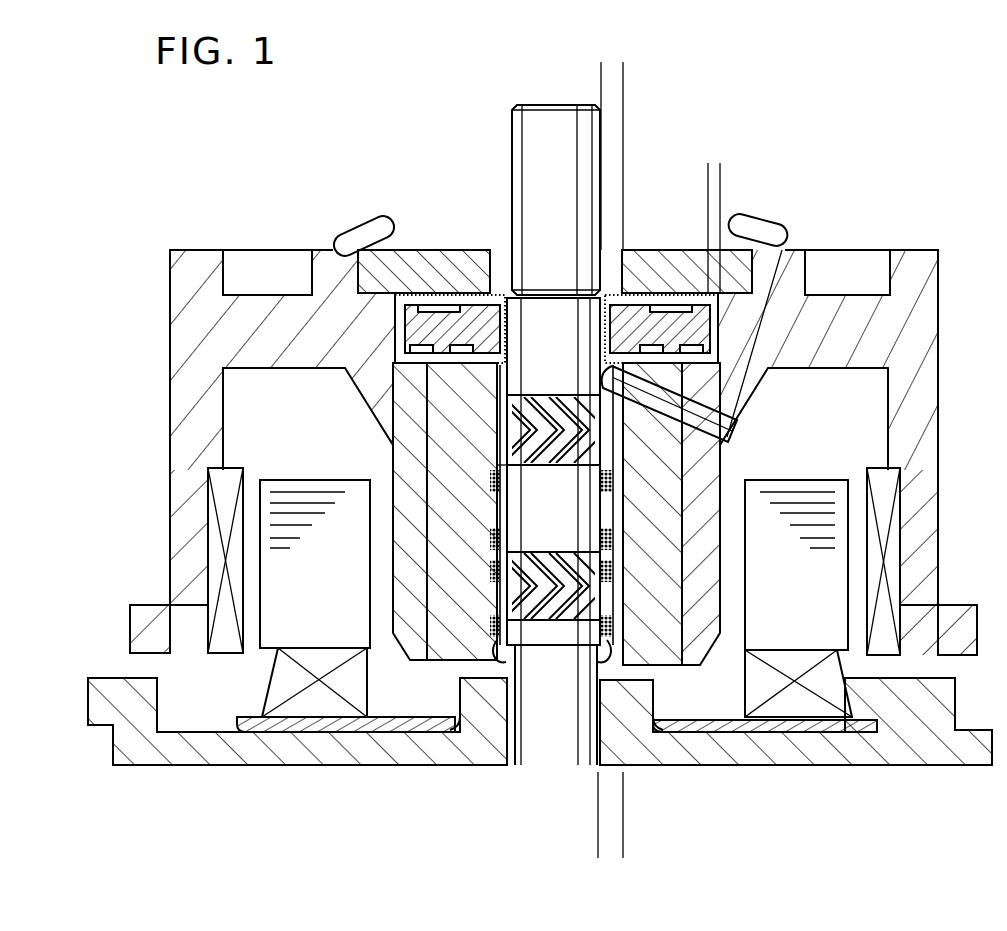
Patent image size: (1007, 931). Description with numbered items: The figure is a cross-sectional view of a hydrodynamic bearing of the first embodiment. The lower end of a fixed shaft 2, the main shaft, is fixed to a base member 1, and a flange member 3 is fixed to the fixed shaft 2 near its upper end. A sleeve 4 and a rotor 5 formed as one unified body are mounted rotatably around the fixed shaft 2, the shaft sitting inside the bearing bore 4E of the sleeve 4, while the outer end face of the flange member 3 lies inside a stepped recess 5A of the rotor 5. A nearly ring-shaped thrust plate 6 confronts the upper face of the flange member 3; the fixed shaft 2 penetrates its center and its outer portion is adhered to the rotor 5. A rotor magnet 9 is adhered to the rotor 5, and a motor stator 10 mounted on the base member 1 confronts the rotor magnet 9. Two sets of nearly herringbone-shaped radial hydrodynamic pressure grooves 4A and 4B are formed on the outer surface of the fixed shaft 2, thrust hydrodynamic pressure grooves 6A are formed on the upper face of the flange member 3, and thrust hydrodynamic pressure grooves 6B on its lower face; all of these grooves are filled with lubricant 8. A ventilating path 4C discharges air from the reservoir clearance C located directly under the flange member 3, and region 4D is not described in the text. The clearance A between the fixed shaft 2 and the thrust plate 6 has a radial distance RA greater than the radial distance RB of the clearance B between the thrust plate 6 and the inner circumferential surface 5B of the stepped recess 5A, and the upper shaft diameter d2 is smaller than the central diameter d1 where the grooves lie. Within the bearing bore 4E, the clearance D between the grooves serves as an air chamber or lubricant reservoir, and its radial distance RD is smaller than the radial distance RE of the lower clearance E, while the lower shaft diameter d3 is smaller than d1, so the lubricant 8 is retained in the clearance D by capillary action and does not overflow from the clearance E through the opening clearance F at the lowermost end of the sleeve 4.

The base member 1 is at (310, 755).
The fixed shaft 2 is at (512, 130).
The flange member 3 is at (720, 343).
The sleeve 4 is at (566, 591).
The upper radial hydrodynamic pressure grooves 4A is at (475, 410).
The lower radial hydrodynamic pressure grooves 4B is at (490, 603).
The ventilating path 4C is at (730, 438).
The core seal portion 4D is at (488, 537).
The bearing bore 4E is at (490, 670).
The rotor 5 is at (568, 427).
The stepped recess 5A is at (765, 372).
The inner circumferential surface 5B is at (367, 320).
The thrust plate 6 is at (555, 229).
The thrust hydrodynamic pressure grooves 6A is at (635, 293).
The thrust hydrodynamic pressure grooves 6B is at (467, 293).
The lubricant 8 is at (723, 327).
The rotor magnet 9 is at (887, 640).
The motor stator 10 is at (820, 632).
The clearance A is at (503, 253).
The clearance B is at (485, 372).
The clearance C is at (433, 390).
The clearance D is at (495, 472).
The clearance E is at (473, 660).
The clearance F is at (630, 680).
The diameter d1 is at (600, 528).
The diameter d2 is at (600, 178).
The diameter d3 is at (597, 730).
The distance RA is at (640, 68).
The distance RB is at (742, 173).
The distance RD is at (660, 813).
The distance RE is at (655, 848).